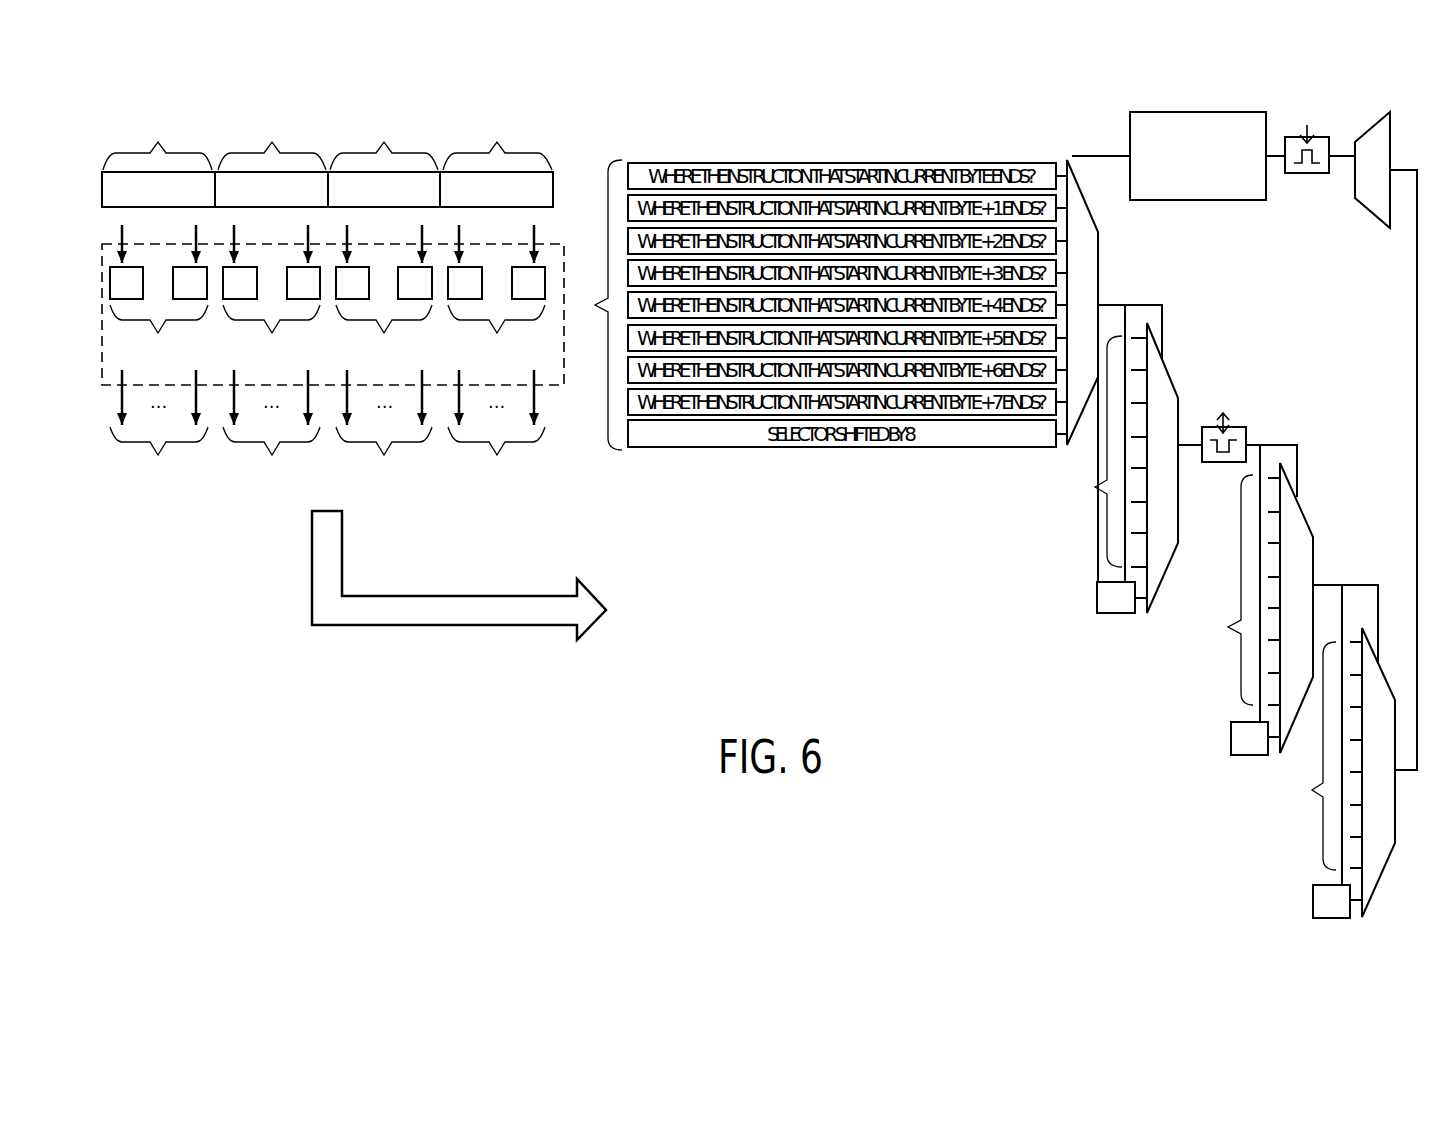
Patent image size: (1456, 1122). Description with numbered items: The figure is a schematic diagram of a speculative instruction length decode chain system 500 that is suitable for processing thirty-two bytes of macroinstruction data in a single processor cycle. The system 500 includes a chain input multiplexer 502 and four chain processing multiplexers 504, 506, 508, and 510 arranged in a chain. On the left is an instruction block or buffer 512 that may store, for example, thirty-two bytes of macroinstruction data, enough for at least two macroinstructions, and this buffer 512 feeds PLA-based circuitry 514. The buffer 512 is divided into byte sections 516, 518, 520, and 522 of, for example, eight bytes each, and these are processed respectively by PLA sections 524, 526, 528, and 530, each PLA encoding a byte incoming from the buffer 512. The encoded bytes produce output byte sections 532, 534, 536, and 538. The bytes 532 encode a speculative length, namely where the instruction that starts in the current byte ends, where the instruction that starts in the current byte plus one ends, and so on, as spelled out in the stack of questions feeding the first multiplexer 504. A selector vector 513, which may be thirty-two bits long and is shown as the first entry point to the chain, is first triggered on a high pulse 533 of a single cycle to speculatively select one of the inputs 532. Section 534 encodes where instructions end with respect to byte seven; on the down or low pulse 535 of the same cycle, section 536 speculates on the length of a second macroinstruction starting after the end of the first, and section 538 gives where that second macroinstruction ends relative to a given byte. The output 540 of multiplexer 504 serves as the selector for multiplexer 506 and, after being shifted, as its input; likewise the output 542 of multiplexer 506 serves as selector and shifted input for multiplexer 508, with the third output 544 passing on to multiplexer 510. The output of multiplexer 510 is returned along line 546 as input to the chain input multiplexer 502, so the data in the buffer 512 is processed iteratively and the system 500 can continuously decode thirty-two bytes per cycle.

The speculative instruction length decode chain system 500 is at (1428, 148).
The chain input multiplexer 502 is at (1375, 115).
The first chain processing multiplexer 504 is at (1100, 268).
The second chain processing multiplexer 506 is at (1180, 412).
The third chain processing multiplexer 508 is at (1313, 553).
The fourth chain processing multiplexer 510 is at (1398, 815).
The instruction buffer 512 is at (555, 188).
The selector vector 513 is at (1130, 132).
The PLA-based circuitry 514 is at (566, 385).
The first byte section 516 is at (157, 142).
The second byte section 518 is at (272, 142).
The third byte section 520 is at (384, 142).
The fourth byte section 522 is at (497, 142).
The first PLA section 524 is at (159, 315).
The second PLA section 526 is at (271, 315).
The third PLA section 528 is at (384, 315).
The fourth PLA section 530 is at (496, 315).
The first output byte section 532 is at (590, 266).
The high pulse 533 is at (1306, 175).
The second output byte section 534 is at (672, 451).
The low pulse 535 is at (1218, 463).
The third output byte section 536 is at (794, 566).
The fourth output byte section 538 is at (892, 648).
The output of the first multiplexer 540 is at (1162, 334).
The output of the second multiplexer 542 is at (1297, 457).
The output of the fourth multiplexer 544 is at (1352, 583).
The chain feedback line 546 is at (1417, 352).